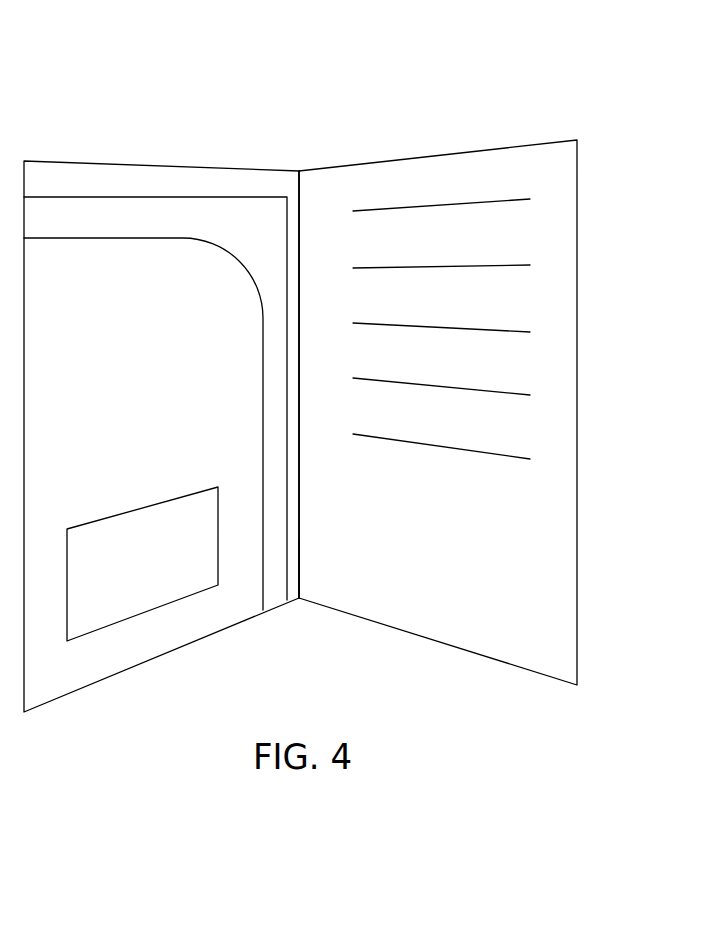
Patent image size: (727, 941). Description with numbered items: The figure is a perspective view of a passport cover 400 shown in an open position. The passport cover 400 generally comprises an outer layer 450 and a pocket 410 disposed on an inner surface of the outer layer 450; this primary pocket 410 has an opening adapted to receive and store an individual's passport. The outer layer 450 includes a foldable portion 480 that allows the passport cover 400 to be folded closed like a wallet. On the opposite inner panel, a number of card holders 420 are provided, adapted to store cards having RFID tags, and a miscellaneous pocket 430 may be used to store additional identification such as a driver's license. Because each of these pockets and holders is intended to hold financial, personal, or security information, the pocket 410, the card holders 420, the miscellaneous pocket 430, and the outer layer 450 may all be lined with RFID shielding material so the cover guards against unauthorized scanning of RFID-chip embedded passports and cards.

The passport cover 400 is at (140, 31).
The pocket 410 is at (73, 238).
The card holders 420 is at (510, 201).
The miscellaneous pocket 430 is at (145, 582).
The outer layer 450 is at (283, 183).
The foldable portion 480 is at (299, 543).